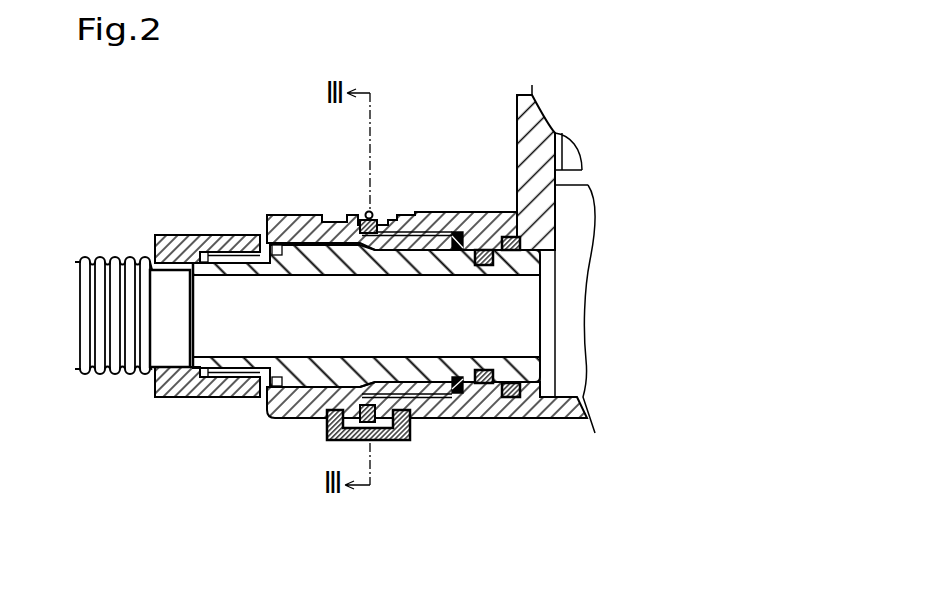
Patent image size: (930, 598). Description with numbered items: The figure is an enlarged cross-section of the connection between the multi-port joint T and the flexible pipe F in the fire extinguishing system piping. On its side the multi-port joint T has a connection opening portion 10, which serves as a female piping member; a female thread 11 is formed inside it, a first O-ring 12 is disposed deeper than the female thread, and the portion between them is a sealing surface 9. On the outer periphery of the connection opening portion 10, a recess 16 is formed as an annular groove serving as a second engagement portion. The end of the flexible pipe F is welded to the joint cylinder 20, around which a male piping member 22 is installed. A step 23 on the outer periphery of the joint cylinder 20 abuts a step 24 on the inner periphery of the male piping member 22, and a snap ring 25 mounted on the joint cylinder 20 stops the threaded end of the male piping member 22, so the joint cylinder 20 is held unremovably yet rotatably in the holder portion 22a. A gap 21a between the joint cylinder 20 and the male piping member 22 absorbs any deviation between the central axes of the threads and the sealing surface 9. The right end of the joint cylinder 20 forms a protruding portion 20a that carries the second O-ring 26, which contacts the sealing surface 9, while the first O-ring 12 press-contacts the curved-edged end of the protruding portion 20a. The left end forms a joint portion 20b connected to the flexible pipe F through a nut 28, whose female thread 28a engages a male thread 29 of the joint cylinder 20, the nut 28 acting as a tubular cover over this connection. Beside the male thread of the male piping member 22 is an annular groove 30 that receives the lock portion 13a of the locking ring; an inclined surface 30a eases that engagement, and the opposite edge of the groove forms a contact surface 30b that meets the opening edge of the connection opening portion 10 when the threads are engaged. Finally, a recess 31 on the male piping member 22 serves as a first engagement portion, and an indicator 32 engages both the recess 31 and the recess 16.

The connection opening portion 10 is at (477, 212).
The male piping member 22 is at (246, 234).
The holder portion 22a is at (266, 215).
The recess 16 is at (434, 222).
The inclined surface 30a is at (390, 215).
The contact surface 30b is at (368, 212).
The multi-port joint T is at (519, 108).
The female thread 11 is at (442, 405).
The gap 21a is at (448, 398).
The joint cylinder 20 is at (533, 262).
The step 23 is at (359, 372).
The step 24 is at (366, 316).
The protruding portion 20a is at (532, 380).
The joint portion 20b is at (204, 372).
The nut 28 is at (170, 234).
The female thread 28a is at (226, 234).
The male thread 29 is at (241, 397).
The recess 31 is at (272, 245).
The second O-ring 26 is at (487, 265).
The sealing surface 9 is at (485, 370).
The first O-ring 12 is at (515, 383).
The snap ring 25 is at (458, 378).
The groove 30 is at (363, 233).
The indicator 32 is at (326, 430).
The lock portion 13a is at (377, 416).
The flexible pipe F is at (110, 372).